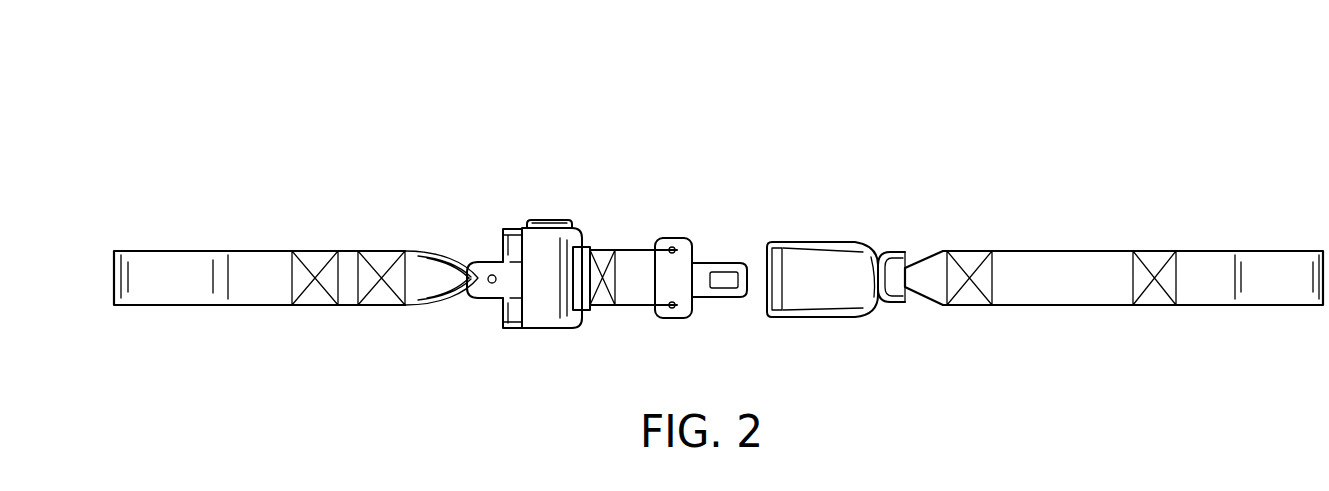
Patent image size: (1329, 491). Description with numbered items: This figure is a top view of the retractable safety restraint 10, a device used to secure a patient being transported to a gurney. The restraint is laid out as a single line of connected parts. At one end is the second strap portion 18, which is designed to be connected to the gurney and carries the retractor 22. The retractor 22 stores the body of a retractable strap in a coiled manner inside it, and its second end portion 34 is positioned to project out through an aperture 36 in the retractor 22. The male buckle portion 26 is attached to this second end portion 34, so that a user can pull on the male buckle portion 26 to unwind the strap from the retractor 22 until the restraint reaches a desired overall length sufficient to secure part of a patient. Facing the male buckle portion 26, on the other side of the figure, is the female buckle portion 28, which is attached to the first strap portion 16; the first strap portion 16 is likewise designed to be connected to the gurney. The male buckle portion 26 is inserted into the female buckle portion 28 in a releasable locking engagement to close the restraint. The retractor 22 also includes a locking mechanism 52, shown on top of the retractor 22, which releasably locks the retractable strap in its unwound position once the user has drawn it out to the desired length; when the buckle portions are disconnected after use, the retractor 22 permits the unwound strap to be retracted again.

The retractable safety restraint 10 is at (796, 145).
The first strap portion 16 is at (1063, 208).
The second strap portion 18 is at (326, 215).
The retractor 22 is at (548, 313).
The male buckle portion 26 is at (683, 310).
The female buckle portion 28 is at (823, 252).
The second end portion 34 is at (643, 268).
The aperture 36 is at (580, 277).
The locking mechanism 52 is at (552, 220).